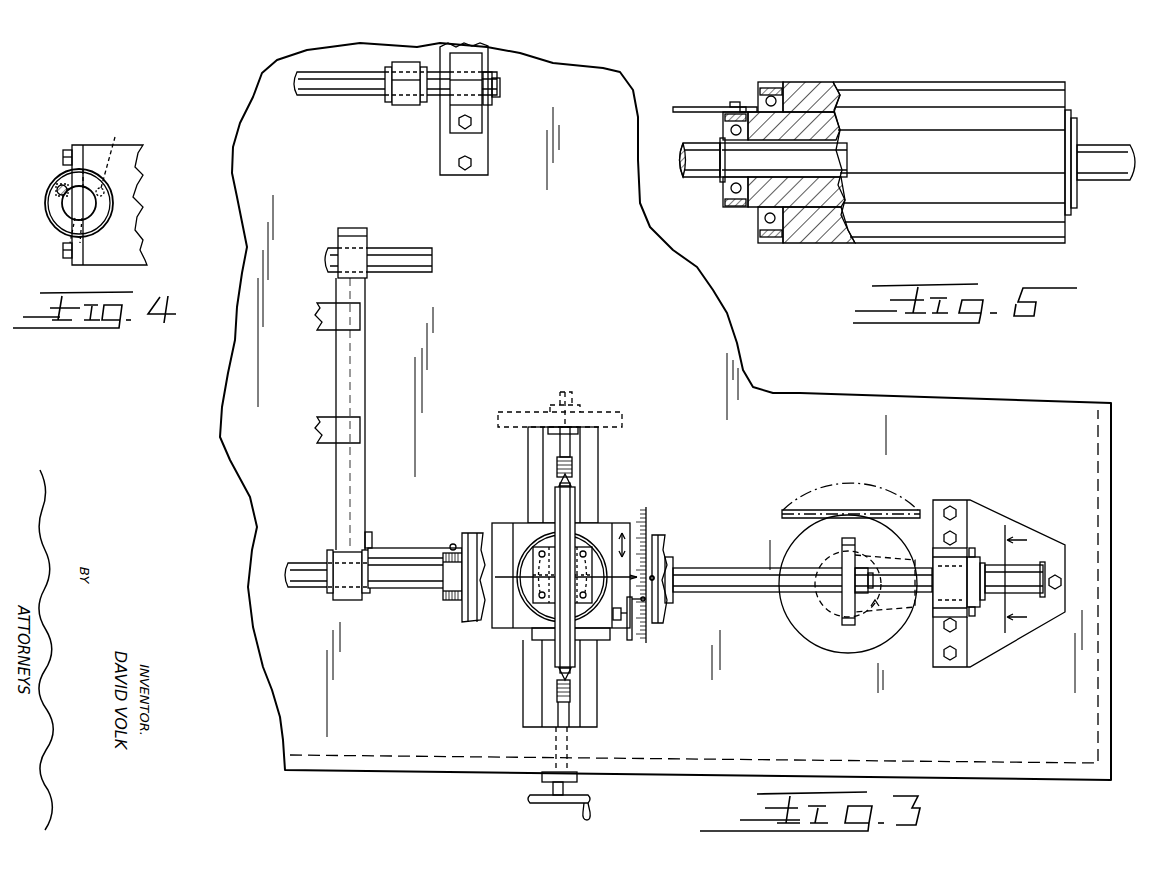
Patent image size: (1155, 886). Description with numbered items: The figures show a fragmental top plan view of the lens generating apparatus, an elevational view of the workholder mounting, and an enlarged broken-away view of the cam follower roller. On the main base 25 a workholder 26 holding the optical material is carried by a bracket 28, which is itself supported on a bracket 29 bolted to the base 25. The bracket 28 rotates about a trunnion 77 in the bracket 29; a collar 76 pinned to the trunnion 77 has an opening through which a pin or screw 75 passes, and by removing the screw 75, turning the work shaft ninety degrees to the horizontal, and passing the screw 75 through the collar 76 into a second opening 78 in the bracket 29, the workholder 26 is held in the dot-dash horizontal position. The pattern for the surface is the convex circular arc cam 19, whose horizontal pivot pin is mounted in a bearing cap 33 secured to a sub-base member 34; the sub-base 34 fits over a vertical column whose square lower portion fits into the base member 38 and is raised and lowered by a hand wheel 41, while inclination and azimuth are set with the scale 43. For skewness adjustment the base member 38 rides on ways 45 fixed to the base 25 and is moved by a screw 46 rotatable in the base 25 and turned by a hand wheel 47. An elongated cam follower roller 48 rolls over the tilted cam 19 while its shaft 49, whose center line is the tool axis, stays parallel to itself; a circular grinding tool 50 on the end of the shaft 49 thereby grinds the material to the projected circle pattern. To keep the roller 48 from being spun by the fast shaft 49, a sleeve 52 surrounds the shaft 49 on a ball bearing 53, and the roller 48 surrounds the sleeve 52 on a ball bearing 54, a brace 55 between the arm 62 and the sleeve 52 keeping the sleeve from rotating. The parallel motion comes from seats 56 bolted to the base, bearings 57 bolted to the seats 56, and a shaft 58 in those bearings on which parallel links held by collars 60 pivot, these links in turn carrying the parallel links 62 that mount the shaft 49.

In FIG. 3, the convex cam 19 is at (572, 484).
In FIG. 3, the base 25 is at (665, 411).
In FIG. 3, the workholder 26 is at (793, 538).
In FIG. 3, the bracket 28 is at (876, 610).
In FIG. 4, the bracket 29 is at (128, 153).
In FIG. 3, the bracket 29 is at (1017, 525).
In FIG. 3, the bearing cap 33 is at (530, 593).
In FIG. 3, the sub-base member 34 is at (530, 613).
In FIG. 3, the base member 38 is at (520, 523).
In FIG. 3, the hand wheel 41 is at (628, 640).
In FIG. 3, the scale 43 is at (588, 543).
In FIG. 3, the ways 45 is at (593, 447).
In FIG. 3, the screw 46 is at (573, 467).
In FIG. 3, the hand wheel 47 is at (552, 803).
In FIG. 5, the cam follower roller 48 is at (947, 96).
In FIG. 3, the cam follower roller 48 is at (470, 533).
In FIG. 5, the shaft 49 is at (1112, 160).
In FIG. 3, the shaft 49 is at (312, 583).
In FIG. 3, the grinding tool 50 is at (857, 550).
In FIG. 5, the sleeve 52 is at (808, 120).
In FIG. 3, the sleeve 52 is at (452, 600).
In FIG. 5, the ball bearing 53 is at (724, 125).
In FIG. 5, the ball bearing 54 is at (763, 93).
In FIG. 5, the brace 55 is at (705, 101).
In FIG. 3, the brace 55 is at (405, 548).
In FIG. 3, the seats 56 is at (480, 145).
In FIG. 3, the bearings 57 is at (484, 122).
In FIG. 3, the shaft 58 is at (312, 86).
In FIG. 3, the collars 60 is at (395, 103).
In FIG. 3, the parallel links 62 is at (358, 470).
In FIG. 4, the pin or screw 75 is at (60, 187).
In FIG. 4, the collar 76 is at (113, 203).
In FIG. 3, the collar 76 is at (978, 620).
In FIG. 4, the trunnion 77 is at (83, 210).
In FIG. 3, the trunnion 77 is at (990, 583).
In FIG. 4, the second opening 78 is at (99, 178).